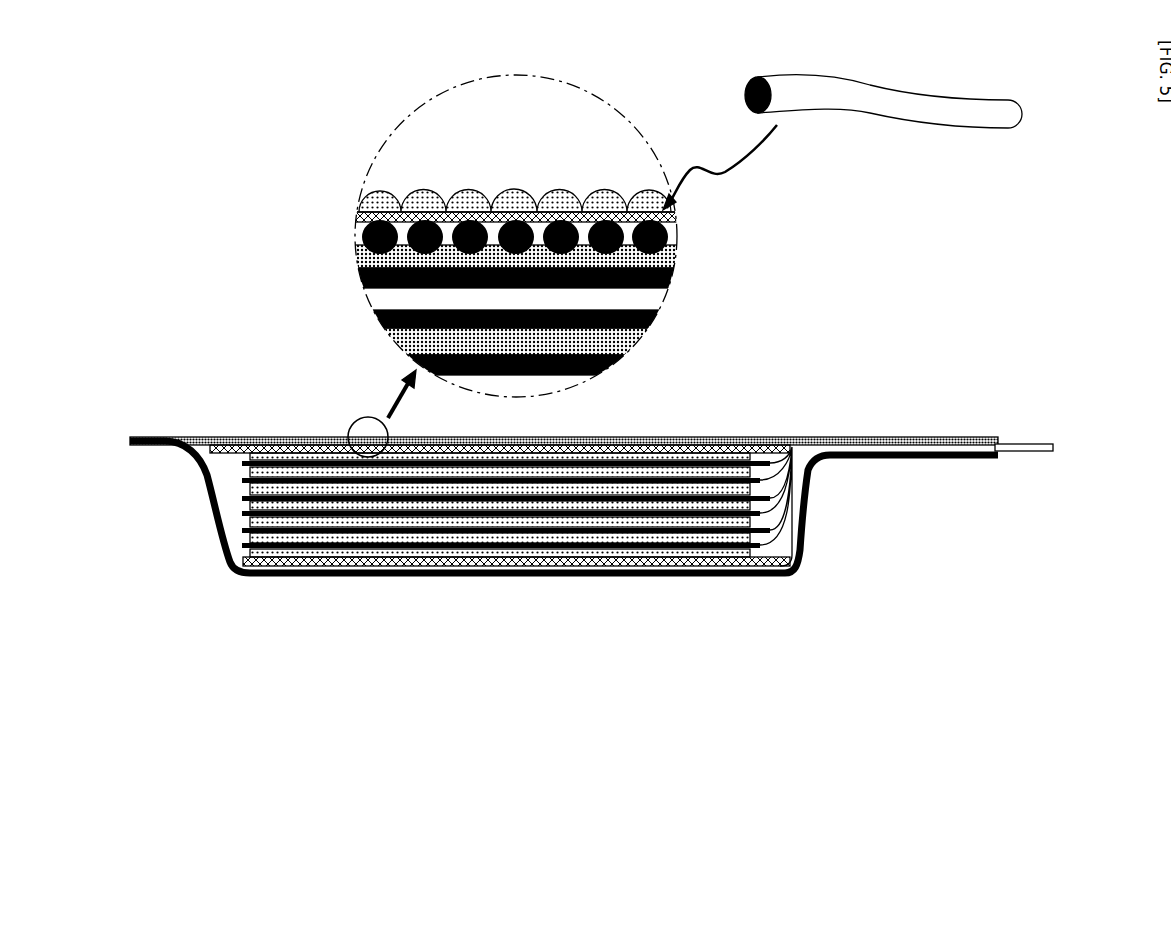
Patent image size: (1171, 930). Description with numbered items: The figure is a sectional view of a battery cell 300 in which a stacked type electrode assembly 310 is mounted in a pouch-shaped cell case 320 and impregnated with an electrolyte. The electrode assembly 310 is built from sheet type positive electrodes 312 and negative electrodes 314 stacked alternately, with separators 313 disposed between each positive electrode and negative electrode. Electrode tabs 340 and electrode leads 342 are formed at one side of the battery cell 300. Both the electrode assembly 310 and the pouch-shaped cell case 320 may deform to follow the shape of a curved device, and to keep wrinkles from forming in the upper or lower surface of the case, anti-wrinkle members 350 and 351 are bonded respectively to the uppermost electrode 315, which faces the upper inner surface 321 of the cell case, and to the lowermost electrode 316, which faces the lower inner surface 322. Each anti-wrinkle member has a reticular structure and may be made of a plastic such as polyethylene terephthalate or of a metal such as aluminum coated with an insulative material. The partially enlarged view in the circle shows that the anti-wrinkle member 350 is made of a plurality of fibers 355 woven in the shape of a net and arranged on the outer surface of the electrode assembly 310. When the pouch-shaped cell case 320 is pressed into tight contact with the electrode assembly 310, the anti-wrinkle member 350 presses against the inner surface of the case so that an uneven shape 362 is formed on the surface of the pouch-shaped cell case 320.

The battery cell 300 is at (215, 147).
The stacked type electrode assembly 310 is at (220, 504).
The positive electrodes 312 is at (252, 524).
The separators 313 is at (677, 280).
The negative electrodes 314 is at (655, 304).
The uppermost electrode 315 is at (677, 256).
The lowermost electrode 316 is at (255, 574).
The pouch-shaped cell case 320 is at (190, 437).
The upper inner surface 321 is at (343, 442).
The lower inner surface 322 is at (414, 574).
The electrode tabs 340 is at (808, 461).
The electrode leads 342 is at (1015, 444).
The anti-wrinkle member 350 is at (284, 445).
The anti-wrinkle member 351 is at (337, 566).
The fibers 355 is at (353, 228).
The uneven shape 362 is at (610, 200).